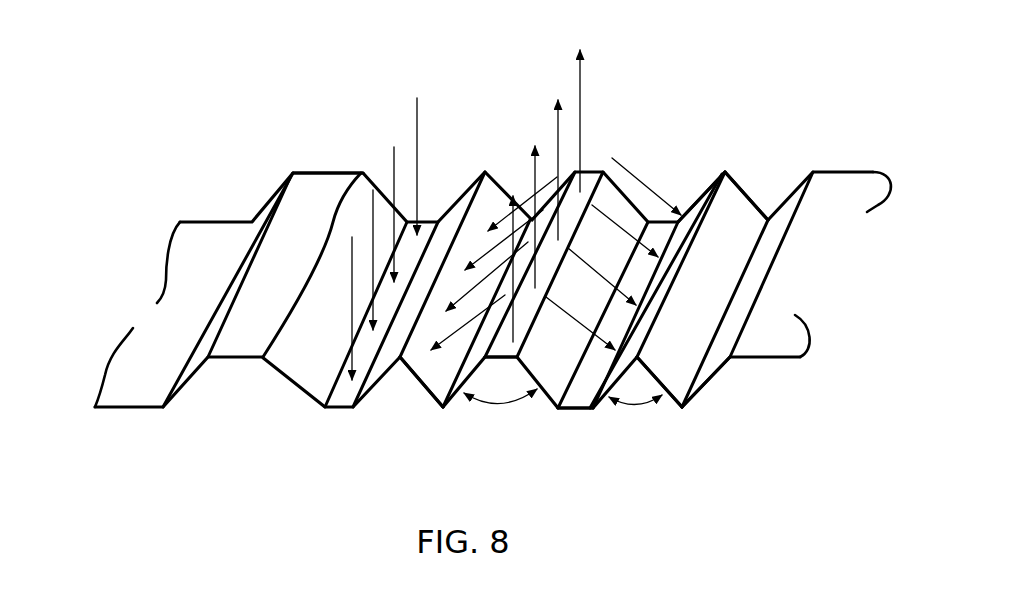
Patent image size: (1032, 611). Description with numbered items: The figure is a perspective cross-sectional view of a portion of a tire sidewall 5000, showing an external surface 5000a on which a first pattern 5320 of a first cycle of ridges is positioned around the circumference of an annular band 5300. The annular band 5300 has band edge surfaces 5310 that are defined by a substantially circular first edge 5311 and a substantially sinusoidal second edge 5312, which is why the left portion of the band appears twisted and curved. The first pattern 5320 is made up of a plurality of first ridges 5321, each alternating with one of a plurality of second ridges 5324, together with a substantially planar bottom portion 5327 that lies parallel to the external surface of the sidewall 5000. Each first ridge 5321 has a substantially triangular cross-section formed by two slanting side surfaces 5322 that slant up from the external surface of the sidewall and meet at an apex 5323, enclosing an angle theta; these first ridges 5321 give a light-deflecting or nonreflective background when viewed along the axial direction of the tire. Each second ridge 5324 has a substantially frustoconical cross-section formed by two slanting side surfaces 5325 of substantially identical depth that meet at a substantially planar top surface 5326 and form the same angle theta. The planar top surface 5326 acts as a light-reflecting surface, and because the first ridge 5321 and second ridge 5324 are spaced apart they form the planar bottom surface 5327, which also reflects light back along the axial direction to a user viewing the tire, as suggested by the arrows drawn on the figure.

The tire sidewall 5000 is at (304, 84).
The external surface 5000a is at (181, 248).
The annular band 5300 is at (345, 158).
The band edge surfaces 5310 is at (300, 253).
The first edge 5311 is at (269, 214).
The second edge 5312 is at (340, 202).
The first pattern 5320 is at (618, 294).
The first ridges 5321 is at (669, 419).
The slanting side surfaces 5322 is at (665, 363).
The apex 5323 is at (703, 202).
The second ridges 5324 is at (470, 417).
The slanting side surfaces 5325 is at (537, 364).
The planar top surface 5326 is at (580, 190).
The planar bottom portion 5327 is at (584, 372).